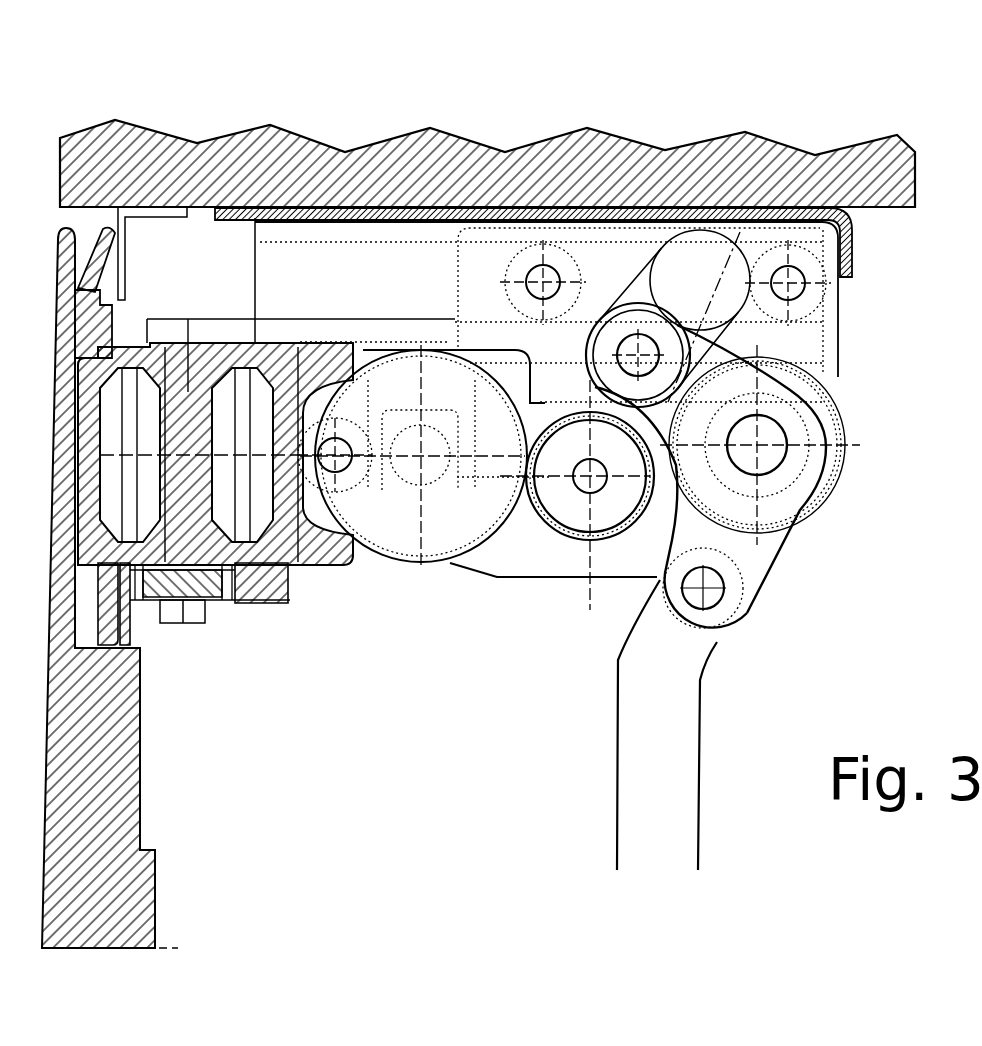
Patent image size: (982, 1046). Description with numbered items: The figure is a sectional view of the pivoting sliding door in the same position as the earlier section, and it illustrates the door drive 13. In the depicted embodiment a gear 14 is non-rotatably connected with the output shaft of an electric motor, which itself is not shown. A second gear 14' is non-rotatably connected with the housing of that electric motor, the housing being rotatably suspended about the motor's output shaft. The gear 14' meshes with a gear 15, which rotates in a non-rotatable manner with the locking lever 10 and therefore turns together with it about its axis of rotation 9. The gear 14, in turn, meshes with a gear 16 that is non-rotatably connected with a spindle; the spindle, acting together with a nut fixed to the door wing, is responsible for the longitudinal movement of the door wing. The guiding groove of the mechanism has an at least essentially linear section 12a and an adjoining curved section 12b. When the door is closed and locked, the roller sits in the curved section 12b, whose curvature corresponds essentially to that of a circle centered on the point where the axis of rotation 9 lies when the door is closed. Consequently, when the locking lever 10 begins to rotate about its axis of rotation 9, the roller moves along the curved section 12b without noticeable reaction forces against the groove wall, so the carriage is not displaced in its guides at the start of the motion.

The axis of rotation 9 is at (775, 437).
The locking lever 10 is at (753, 552).
The linear section 12a is at (645, 248).
The curved section 12b is at (560, 349).
The door drive 13 is at (530, 615).
The gear 14 is at (575, 495).
The gear 14' is at (555, 620).
The gear 15 is at (824, 487).
The gear 16 is at (390, 523).